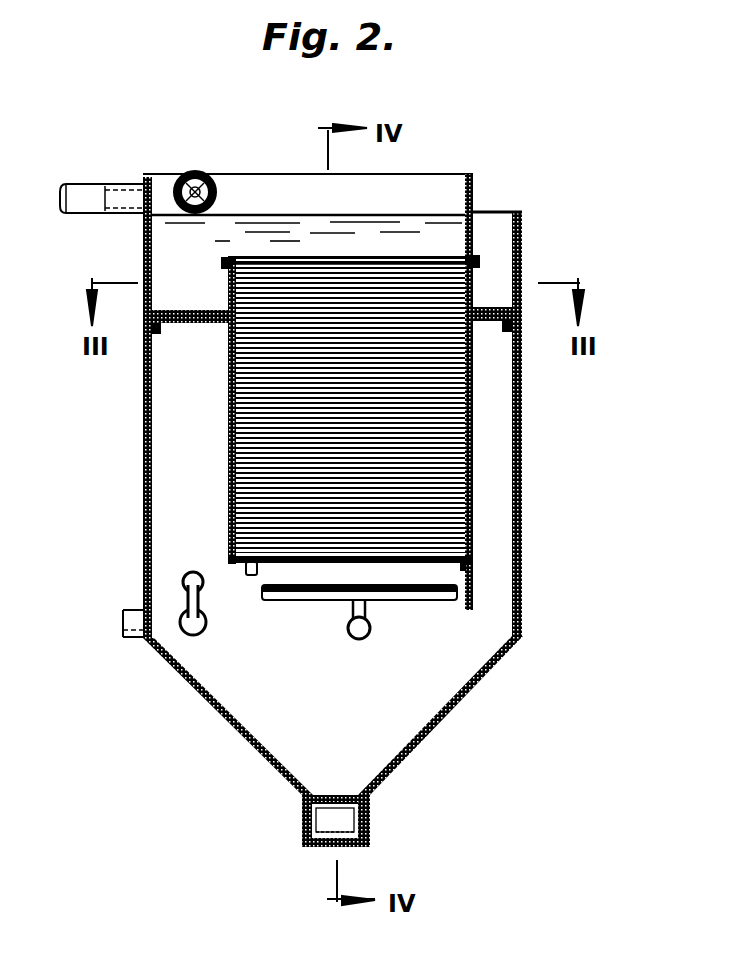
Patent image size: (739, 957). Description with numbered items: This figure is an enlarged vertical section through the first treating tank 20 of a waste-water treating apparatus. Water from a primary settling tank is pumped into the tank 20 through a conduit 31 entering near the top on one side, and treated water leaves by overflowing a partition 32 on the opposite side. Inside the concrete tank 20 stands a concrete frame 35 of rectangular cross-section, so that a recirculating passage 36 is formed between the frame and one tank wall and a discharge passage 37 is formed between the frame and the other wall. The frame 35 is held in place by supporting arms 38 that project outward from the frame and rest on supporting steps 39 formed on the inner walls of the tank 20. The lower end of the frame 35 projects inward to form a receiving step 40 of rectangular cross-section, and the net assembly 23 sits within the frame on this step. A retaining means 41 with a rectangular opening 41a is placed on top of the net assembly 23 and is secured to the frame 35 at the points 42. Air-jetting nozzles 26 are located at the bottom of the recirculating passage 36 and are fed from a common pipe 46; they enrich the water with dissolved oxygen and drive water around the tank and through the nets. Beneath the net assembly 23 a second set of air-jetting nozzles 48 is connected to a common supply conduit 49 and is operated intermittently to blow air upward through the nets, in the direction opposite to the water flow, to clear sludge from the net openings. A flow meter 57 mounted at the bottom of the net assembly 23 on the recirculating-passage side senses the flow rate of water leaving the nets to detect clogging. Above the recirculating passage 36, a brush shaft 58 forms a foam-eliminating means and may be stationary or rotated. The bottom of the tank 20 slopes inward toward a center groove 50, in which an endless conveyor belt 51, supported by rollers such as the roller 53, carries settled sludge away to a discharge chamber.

The first treating tank 20 is at (146, 560).
The net assembly 23 is at (270, 484).
The air-jetting nozzles 26 is at (182, 580).
The conduit 31 is at (84, 198).
The partition 32 is at (522, 412).
The frame 35 is at (228, 456).
The recirculating passage 36 is at (178, 418).
The discharge passage 37 is at (488, 457).
The supporting arms 38 is at (175, 309).
The supporting steps 39 is at (155, 340).
The receiving step 40 is at (238, 568).
The retaining means 41 is at (246, 260).
The rectangular opening 41a is at (292, 262).
The securing point 42 is at (225, 256).
The common pipe 46 is at (197, 632).
The air-jetting nozzles 48 is at (440, 600).
The common supply conduit 49 is at (366, 640).
The center groove 50 is at (330, 838).
The endless conveyor belt 51 is at (342, 800).
The roller 53 is at (325, 820).
The flow meter 57 is at (250, 578).
The brush shaft 58 is at (195, 170).